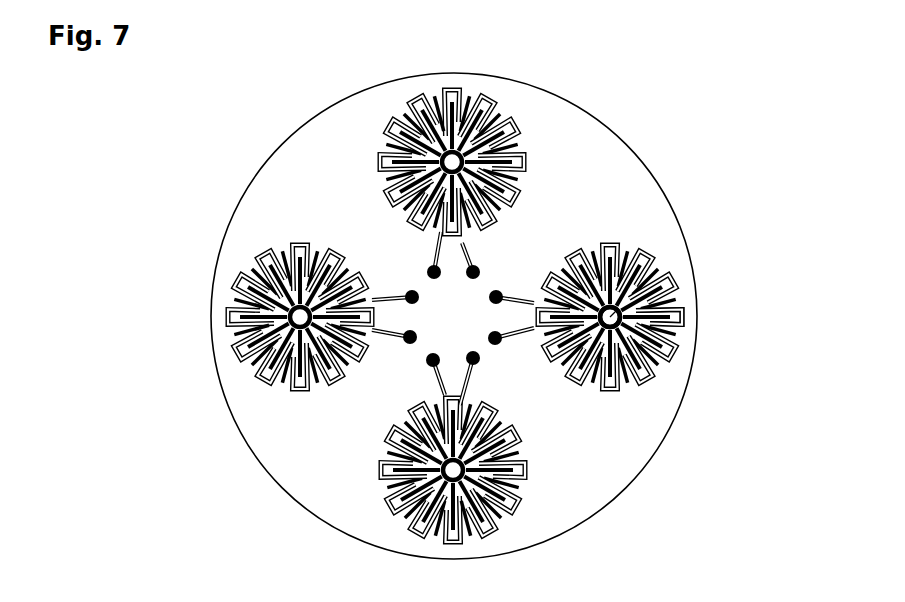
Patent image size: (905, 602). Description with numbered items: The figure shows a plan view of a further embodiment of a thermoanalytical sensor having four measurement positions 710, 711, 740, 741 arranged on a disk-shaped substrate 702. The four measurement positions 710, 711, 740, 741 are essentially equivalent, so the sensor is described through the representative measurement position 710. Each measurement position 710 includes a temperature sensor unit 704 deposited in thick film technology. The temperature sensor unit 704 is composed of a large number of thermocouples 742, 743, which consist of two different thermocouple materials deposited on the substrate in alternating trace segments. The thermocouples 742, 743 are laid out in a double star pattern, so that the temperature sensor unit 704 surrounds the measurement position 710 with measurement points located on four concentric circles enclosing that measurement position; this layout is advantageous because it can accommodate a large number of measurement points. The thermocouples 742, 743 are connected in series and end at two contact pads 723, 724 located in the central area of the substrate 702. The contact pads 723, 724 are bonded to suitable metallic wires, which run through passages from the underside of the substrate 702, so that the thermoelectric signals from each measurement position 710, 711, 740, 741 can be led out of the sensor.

The substrate 702 is at (298, 168).
The temperature sensor unit 704 is at (657, 390).
The measurement position 710 is at (620, 307).
The measurement position 711 is at (404, 103).
The contact pad 723 is at (499, 293).
The contact pad 724 is at (497, 341).
The measurement position 740 is at (241, 258).
The measurement position 741 is at (445, 470).
The thermocouple 742 is at (683, 308).
The thermocouple 743 is at (688, 319).